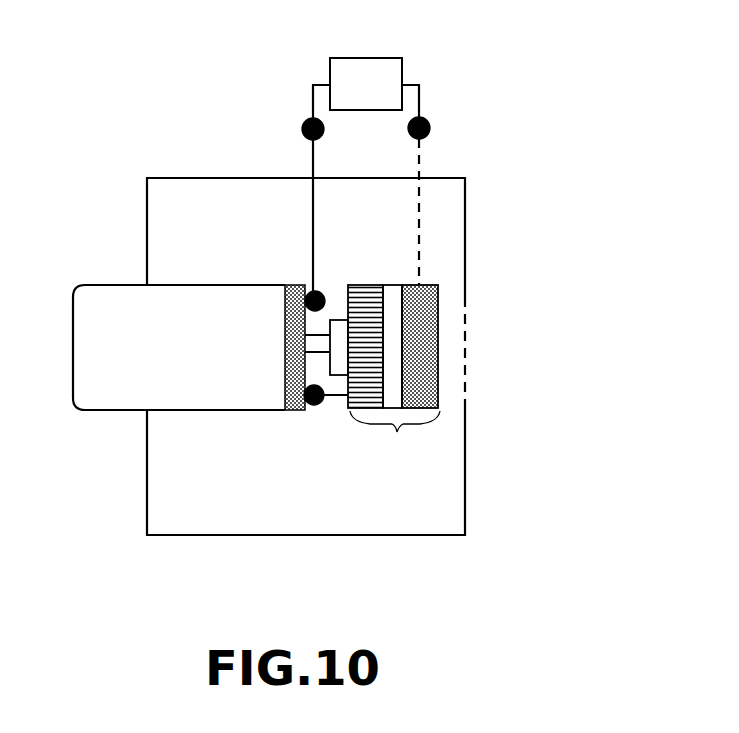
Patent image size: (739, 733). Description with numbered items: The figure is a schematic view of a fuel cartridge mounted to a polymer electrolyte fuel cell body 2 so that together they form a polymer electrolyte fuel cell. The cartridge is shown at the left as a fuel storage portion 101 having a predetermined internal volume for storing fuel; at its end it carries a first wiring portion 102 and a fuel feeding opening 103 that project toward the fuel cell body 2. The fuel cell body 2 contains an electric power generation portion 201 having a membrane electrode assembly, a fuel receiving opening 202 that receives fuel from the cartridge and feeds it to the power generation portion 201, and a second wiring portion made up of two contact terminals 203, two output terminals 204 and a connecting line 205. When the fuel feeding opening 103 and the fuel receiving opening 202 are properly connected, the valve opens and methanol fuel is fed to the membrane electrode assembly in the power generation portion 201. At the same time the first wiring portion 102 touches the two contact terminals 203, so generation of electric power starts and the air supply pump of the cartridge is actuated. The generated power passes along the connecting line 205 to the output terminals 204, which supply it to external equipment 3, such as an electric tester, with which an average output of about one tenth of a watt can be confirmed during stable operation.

The fuel cell body 2 is at (440, 537).
The external equipment 3 is at (366, 67).
The fuel storage portion 101 is at (218, 412).
The first wiring portion 102 is at (297, 413).
The fuel feeding opening 103 is at (322, 402).
The electric power generation portion 201 is at (397, 432).
The fuel receiving opening 202 is at (337, 320).
The contact terminal 203 is at (307, 292).
The output terminal 204 is at (305, 125).
The connecting line 205 is at (313, 200).